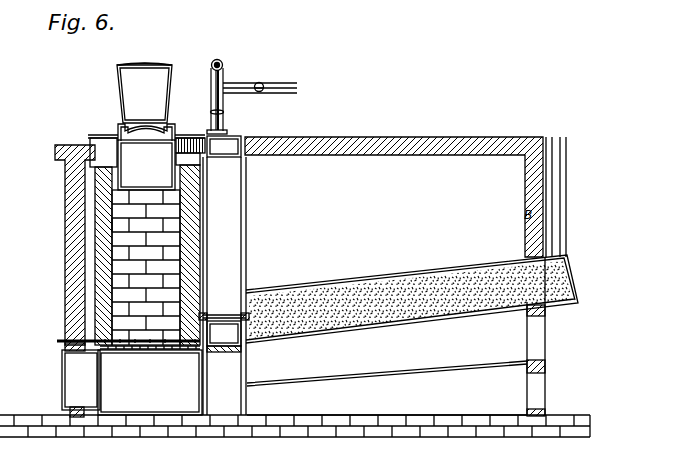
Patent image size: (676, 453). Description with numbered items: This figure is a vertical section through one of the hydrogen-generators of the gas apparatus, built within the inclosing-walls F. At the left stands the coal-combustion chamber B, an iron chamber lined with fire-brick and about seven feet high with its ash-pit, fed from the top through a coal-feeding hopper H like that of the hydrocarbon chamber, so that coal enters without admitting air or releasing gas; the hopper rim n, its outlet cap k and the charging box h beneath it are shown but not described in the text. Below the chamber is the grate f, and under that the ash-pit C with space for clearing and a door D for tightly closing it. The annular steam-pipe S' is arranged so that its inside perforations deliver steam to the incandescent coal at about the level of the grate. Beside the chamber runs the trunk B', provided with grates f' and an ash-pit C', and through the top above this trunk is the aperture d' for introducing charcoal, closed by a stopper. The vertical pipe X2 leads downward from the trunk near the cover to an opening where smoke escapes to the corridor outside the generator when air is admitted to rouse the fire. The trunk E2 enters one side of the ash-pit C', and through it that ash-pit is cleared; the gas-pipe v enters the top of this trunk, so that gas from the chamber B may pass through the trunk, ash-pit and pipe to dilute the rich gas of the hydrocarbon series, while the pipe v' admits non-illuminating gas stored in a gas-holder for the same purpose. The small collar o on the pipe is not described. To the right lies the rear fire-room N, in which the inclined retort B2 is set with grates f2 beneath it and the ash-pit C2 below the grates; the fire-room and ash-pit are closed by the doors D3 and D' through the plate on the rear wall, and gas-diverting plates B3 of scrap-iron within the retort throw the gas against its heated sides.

The inclosing-walls F is at (74, 236).
The coal-combustion chamber B is at (147, 255).
The hopper H is at (144, 84).
The hopper rim n is at (156, 64).
The hopper outlet cap k is at (146, 128).
The charging box h is at (146, 165).
The gas-pipe v is at (215, 92).
The pipe v' is at (260, 80).
The pipe collar o is at (213, 117).
The aperture d' is at (224, 146).
The vertical pipe X2 is at (224, 286).
The trunk B' is at (224, 290).
The grates f' is at (224, 309).
The ash-pit C' is at (224, 333).
The steam-pipe S' is at (128, 334).
The grate f is at (150, 356).
The door D is at (81, 380).
The ash-pit C is at (150, 382).
The fire-room N is at (394, 197).
The end plates B3 is at (553, 214).
The inclined retort B2 is at (355, 291).
The trunk E2 is at (410, 300).
The door D3 is at (545, 343).
The door D' is at (547, 394).
The grates f2 is at (387, 370).
The ash-pit C2 is at (387, 400).